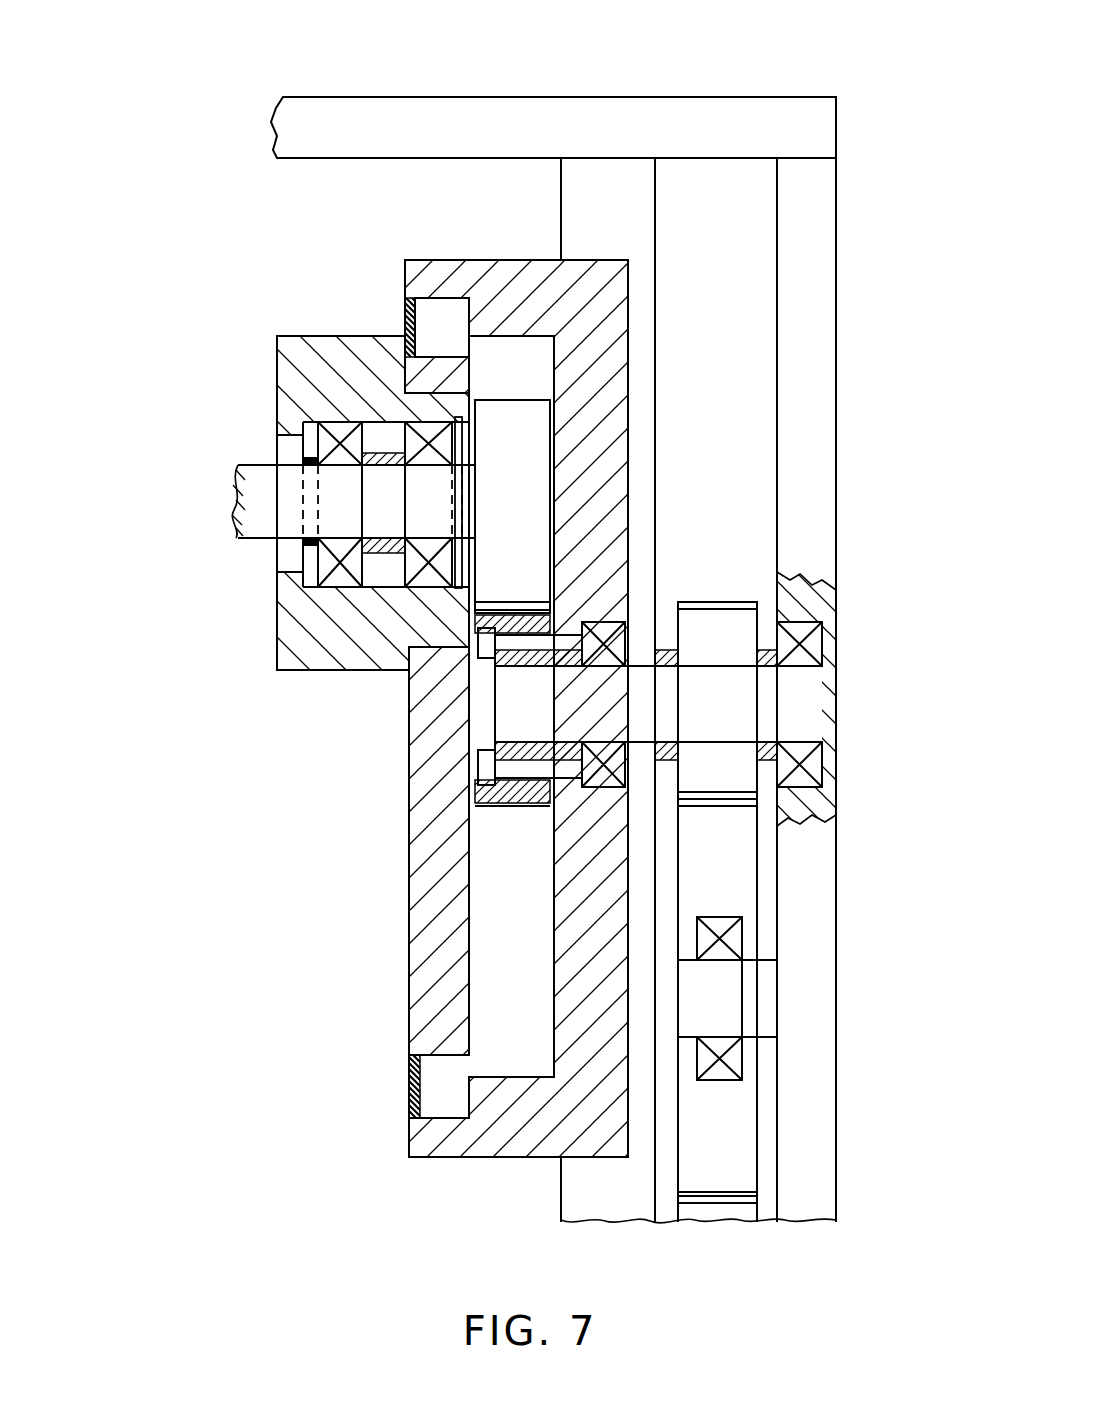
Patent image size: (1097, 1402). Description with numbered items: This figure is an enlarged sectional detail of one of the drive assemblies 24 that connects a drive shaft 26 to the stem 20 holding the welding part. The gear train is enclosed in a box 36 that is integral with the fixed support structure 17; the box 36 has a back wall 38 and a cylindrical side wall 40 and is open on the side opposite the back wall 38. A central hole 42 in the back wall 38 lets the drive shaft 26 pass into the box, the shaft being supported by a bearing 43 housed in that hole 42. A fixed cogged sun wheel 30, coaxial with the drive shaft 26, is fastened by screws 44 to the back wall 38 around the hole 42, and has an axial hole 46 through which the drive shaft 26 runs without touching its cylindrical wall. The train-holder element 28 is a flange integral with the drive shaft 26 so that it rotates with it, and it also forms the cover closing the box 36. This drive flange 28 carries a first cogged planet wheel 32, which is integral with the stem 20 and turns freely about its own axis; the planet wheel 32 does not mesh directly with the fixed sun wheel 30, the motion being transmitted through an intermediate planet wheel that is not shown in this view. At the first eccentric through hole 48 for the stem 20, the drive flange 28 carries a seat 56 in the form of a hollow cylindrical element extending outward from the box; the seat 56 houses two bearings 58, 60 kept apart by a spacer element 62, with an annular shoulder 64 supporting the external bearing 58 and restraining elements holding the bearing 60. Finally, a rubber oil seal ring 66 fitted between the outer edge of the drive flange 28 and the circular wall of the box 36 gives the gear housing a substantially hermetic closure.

The support structure 17 is at (713, 123).
The stem holding the welding part 20 is at (262, 472).
The assembly 24 is at (300, 326).
The drive shaft 26 is at (650, 640).
The train-holder element 28 is at (440, 962).
The fixed cogged sun wheel 30 is at (517, 790).
The first cogged planet wheel 32 is at (500, 435).
The box 36 is at (468, 252).
The back wall 38 is at (603, 358).
The cylindrical side wall 40 is at (468, 1142).
The central hole 42 is at (607, 630).
The bearing 43 is at (642, 688).
The screws 44 is at (482, 650).
The axial hole 46 is at (507, 665).
The first eccentric through hole 48 is at (433, 392).
The seat 56 is at (303, 592).
The external bearing 58 is at (340, 578).
The bearing 60 is at (430, 577).
The spacer element 62 is at (382, 548).
The annular shoulder 64 is at (313, 565).
The rubber oil seal ring 66 is at (410, 1097).